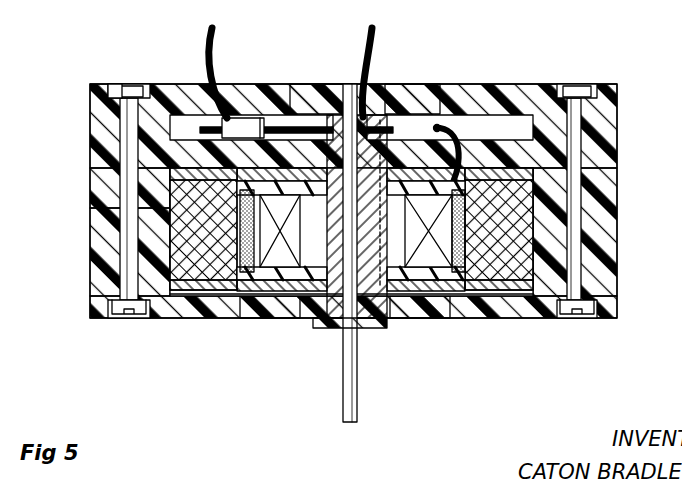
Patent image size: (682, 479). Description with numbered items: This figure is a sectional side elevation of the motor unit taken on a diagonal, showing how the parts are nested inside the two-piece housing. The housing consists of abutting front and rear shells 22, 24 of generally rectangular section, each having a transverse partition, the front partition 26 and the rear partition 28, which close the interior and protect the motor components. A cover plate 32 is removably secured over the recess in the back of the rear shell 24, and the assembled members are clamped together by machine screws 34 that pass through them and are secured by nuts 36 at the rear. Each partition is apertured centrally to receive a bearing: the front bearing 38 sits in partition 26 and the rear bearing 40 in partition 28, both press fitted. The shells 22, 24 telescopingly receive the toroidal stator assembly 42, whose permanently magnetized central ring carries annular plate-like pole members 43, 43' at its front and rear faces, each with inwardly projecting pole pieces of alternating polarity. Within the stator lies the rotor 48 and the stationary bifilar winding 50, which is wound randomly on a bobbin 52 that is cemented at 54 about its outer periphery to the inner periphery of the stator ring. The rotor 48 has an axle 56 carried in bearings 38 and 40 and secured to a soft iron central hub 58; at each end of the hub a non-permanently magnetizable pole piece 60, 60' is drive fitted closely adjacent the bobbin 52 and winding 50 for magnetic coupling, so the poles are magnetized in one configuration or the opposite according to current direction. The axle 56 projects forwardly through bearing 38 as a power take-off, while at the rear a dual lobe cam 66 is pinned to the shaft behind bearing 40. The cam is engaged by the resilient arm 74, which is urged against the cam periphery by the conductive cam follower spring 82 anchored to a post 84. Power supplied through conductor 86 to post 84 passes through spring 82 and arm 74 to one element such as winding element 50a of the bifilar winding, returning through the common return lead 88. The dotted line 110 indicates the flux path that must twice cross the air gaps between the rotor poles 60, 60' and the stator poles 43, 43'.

The front housing shell 22 is at (108, 253).
The rear housing shell 24 is at (108, 140).
The front transverse partition 26 is at (270, 308).
The rear transverse partition 28 is at (270, 149).
The cover plate 32 is at (501, 88).
The machine screws 34 is at (137, 84).
The nuts 36 is at (108, 90).
The front bearing 38 is at (333, 328).
The rear bearing 40 is at (389, 140).
The stator assembly 42 is at (209, 238).
The front pole member 43 is at (351, 321).
The rear pole member 43' is at (348, 194).
The rotor 48 is at (384, 229).
The winding 50 is at (282, 217).
The winding element 50a is at (453, 132).
The bobbin 52 is at (382, 307).
The cement 54 is at (235, 292).
The axle 56 is at (347, 382).
The central hub 58 is at (292, 320).
The rotor pole piece 60 is at (351, 275).
The rotor pole piece 60' is at (220, 73).
The dual lobe cam 66 is at (300, 98).
The resilient arm 74 is at (399, 98).
The cam follower spring 82 is at (279, 132).
The post 84 is at (232, 118).
The conductor 86 is at (206, 44).
The common return lead 88 is at (376, 56).
The flux path 110 is at (232, 294).